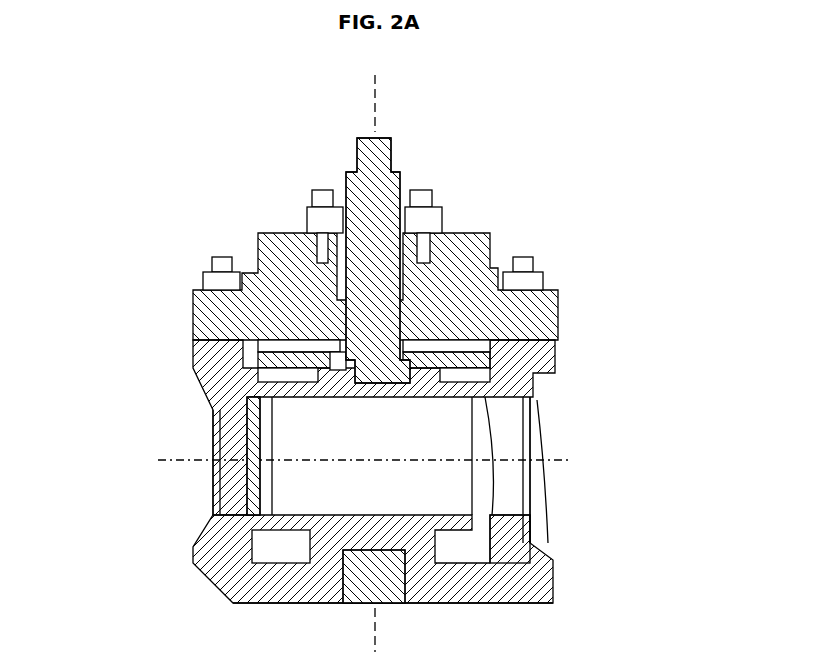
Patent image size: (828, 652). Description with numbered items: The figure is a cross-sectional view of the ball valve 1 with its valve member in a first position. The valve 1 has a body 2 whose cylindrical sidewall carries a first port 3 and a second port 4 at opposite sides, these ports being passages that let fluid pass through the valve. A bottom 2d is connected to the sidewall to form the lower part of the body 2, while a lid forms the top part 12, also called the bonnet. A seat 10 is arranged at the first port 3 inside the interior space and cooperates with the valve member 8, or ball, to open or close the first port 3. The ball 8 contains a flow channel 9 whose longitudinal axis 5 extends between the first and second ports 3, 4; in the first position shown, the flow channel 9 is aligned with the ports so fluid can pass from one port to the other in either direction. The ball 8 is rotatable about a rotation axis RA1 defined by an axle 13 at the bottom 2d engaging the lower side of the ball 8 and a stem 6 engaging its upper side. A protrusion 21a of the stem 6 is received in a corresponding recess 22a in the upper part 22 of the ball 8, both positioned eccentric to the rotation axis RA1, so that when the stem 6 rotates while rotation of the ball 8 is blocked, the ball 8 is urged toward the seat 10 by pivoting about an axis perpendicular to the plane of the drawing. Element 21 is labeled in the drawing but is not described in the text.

The ball valve 1 is at (173, 238).
The rotation axis RA1 is at (375, 103).
The body 2 is at (217, 354).
The bottom 2d is at (457, 592).
The first port 3 is at (203, 485).
The second port 4 is at (543, 482).
The longitudinal axis 5 is at (374, 460).
The stem 6 is at (383, 160).
The valve member 8 is at (458, 523).
The flow channel 9 is at (402, 435).
The seat 10 is at (222, 407).
The top part 12 is at (458, 253).
The axle 13 is at (363, 583).
The seat ring 21 is at (505, 333).
The protrusion 21a is at (377, 363).
The upper part 22 is at (495, 373).
The recess 22a is at (357, 372).